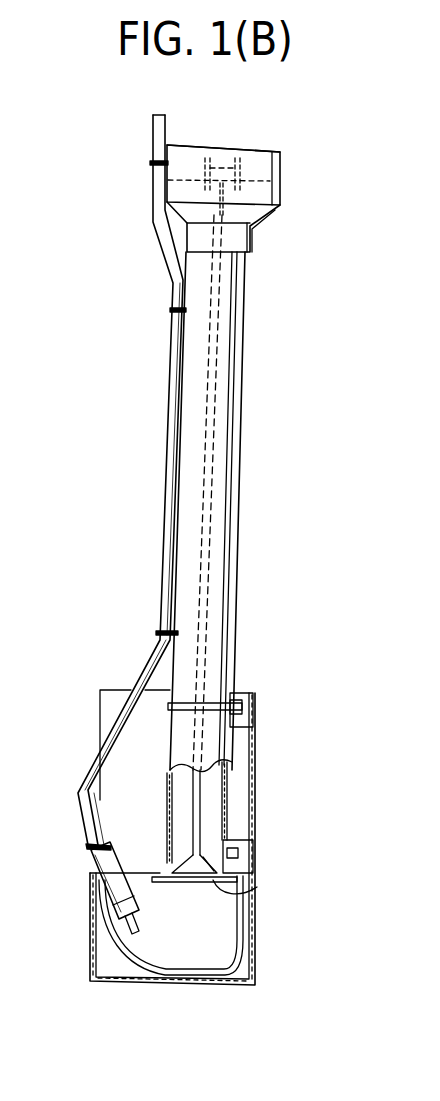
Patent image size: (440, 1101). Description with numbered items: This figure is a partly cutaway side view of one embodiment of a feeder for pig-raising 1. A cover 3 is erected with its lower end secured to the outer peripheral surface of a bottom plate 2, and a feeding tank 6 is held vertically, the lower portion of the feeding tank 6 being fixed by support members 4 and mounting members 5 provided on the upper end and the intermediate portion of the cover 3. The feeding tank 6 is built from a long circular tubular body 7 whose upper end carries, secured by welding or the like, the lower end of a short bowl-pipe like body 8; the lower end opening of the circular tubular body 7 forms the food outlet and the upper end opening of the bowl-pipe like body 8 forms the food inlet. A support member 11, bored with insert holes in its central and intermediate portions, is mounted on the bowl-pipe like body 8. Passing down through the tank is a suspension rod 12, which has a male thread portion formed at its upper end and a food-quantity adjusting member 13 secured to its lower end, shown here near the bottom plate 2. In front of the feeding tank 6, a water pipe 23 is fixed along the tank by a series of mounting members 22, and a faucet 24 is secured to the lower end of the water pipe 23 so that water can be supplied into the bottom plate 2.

The feeder for pig-raising 1 is at (318, 162).
The bottom plate 2 is at (193, 983).
The cover 3 is at (100, 690).
The support member 4 is at (247, 693).
The mounting member 5 is at (216, 700).
The feeding tank 6 is at (241, 461).
The circular tubular body 7 is at (238, 532).
The bowl-pipe like body 8 is at (281, 195).
The support member 11 is at (255, 177).
The suspension rod 12 is at (217, 357).
The food-quantity adjusting member 13 is at (257, 887).
The mounting member 22 is at (150, 163).
The water pipe 23 is at (167, 418).
The faucet 24 is at (107, 928).